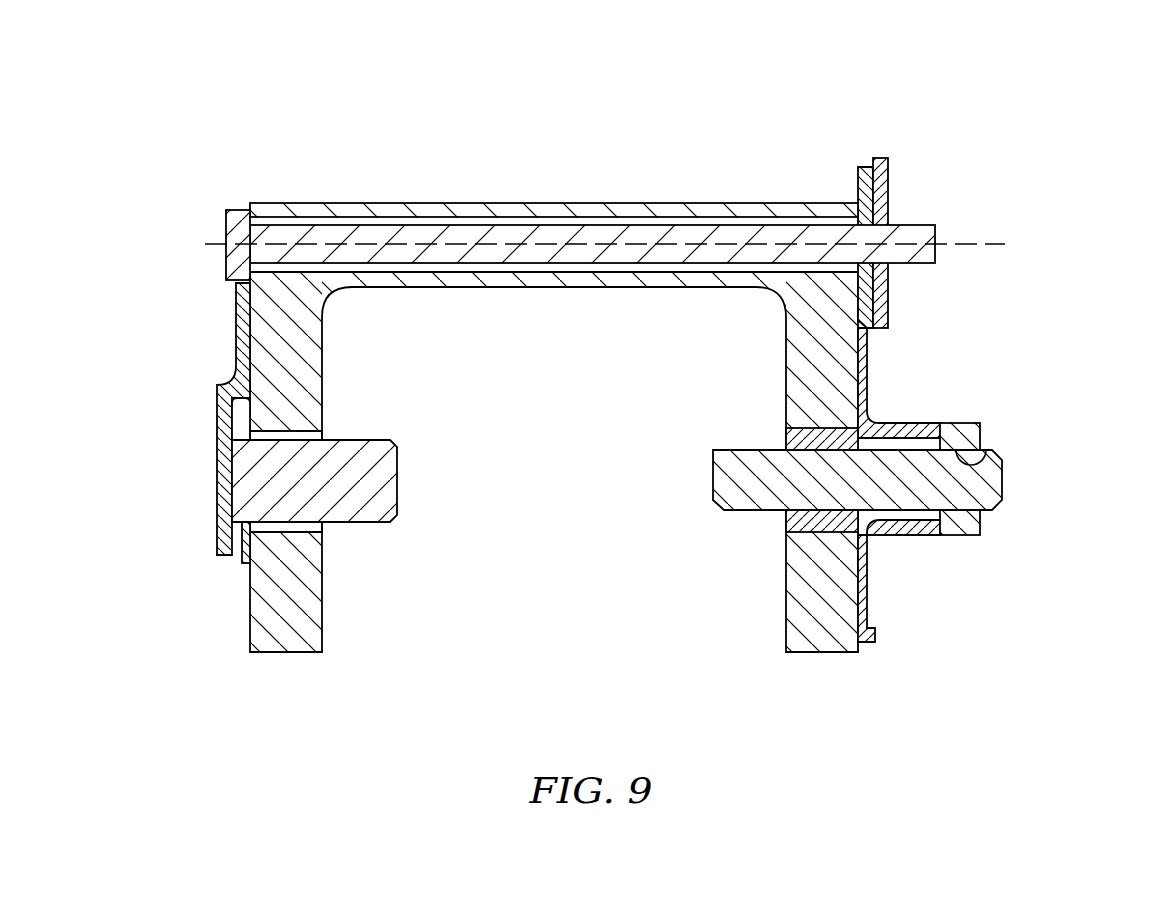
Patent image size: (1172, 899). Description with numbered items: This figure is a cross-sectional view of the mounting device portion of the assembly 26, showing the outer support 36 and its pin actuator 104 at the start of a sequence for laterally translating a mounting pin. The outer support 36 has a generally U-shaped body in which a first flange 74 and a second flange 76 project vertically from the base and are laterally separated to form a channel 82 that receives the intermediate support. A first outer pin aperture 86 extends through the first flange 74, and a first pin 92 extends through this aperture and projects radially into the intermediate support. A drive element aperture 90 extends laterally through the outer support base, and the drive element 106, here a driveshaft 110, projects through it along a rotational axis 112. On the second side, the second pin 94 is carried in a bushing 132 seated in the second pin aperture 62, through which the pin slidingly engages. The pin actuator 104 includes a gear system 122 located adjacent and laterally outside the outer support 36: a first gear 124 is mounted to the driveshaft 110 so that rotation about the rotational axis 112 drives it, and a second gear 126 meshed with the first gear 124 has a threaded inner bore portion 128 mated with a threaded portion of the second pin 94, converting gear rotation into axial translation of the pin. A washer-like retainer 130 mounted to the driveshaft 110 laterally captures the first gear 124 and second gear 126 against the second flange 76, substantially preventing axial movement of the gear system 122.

The brake assembly 26 is at (585, 381).
The outer support 36 is at (519, 503).
The second inner pin aperture 62 is at (790, 527).
The first flange 74 is at (326, 503).
The second flange 76 is at (822, 653).
The channel 82 is at (516, 642).
The first outer pin aperture 86 is at (307, 526).
The drive element aperture 90 is at (588, 218).
The first pin 92 is at (397, 494).
The second pin 94 is at (712, 500).
The pin actuator 104 is at (983, 484).
The drive element 106 is at (156, 251).
The driveshaft 110 is at (228, 263).
The rotational axis 112 is at (995, 243).
The gear system 122 is at (983, 484).
The first gear 124 is at (858, 178).
The second gear 126 is at (870, 369).
The threaded inner bore portion 128 is at (985, 466).
The retainer 130 is at (888, 172).
The bushing 132 is at (797, 437).